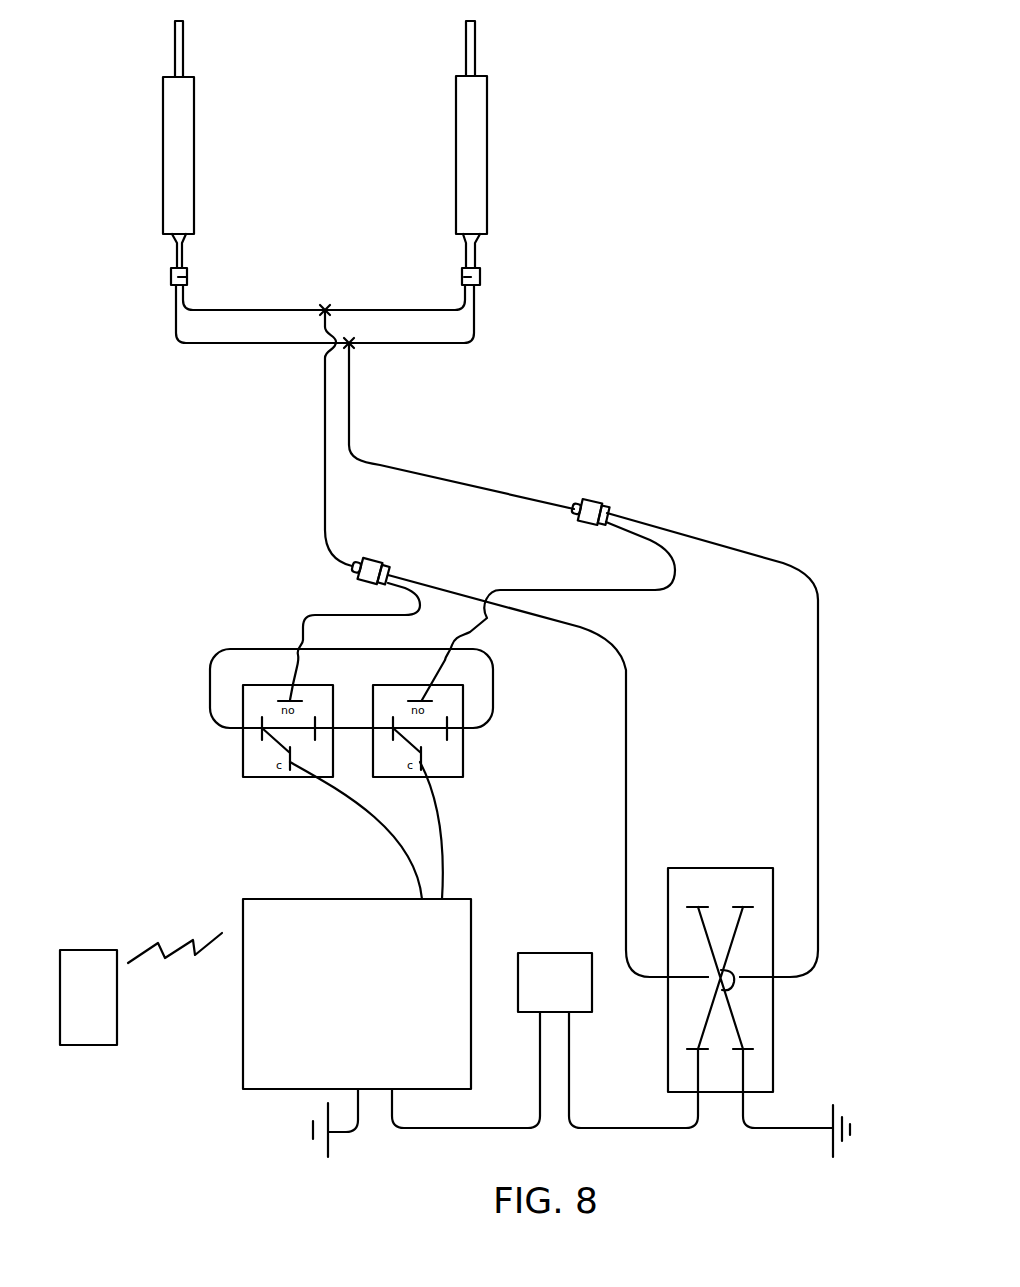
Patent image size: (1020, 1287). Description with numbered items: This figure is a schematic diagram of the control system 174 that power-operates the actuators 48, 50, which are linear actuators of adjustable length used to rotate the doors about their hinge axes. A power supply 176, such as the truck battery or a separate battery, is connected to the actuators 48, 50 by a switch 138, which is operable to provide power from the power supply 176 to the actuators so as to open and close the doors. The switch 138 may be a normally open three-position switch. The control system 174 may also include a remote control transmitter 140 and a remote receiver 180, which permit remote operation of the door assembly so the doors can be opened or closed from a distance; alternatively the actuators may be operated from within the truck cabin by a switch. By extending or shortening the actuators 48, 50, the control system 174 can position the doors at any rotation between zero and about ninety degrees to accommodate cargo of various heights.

The actuator 48 is at (487, 127).
The actuator 50 is at (163, 122).
The switch 138 is at (773, 1018).
The remote control transmitter 140 is at (72, 950).
The control system 174 is at (678, 323).
The power supply 176 is at (548, 953).
The remote receiver 180 is at (243, 1066).